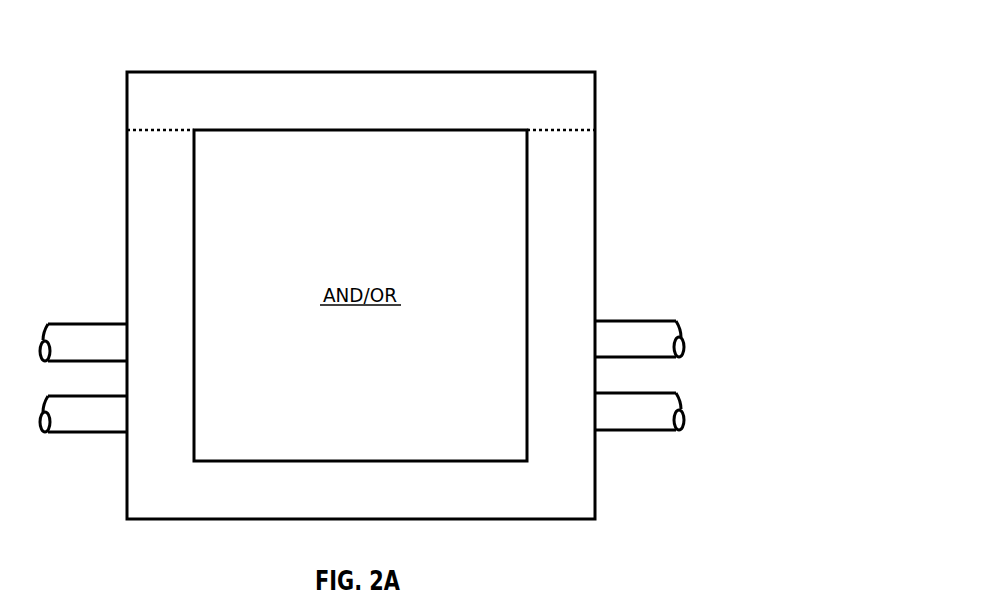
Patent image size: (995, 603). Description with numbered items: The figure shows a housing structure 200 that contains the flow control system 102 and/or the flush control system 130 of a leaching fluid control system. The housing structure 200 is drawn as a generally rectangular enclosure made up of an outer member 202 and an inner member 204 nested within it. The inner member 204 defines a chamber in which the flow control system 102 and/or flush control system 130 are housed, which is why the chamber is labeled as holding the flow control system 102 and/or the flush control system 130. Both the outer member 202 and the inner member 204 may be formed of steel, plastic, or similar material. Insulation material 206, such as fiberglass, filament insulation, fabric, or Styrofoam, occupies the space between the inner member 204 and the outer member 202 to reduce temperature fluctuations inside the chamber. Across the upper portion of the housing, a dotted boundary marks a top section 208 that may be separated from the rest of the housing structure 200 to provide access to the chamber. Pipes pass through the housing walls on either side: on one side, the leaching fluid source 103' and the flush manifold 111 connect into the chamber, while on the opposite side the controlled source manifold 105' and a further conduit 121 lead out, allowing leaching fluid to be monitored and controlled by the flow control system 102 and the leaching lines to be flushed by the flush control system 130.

The housing structure 200 is at (778, 42).
The outer member 202 is at (597, 277).
The inner member 204 is at (527, 424).
The insulation material 206 is at (567, 213).
The top section 208 is at (503, 71).
The flow control system 102 is at (320, 305).
The flush control system 130 is at (433, 305).
The leaching fluid source 103' is at (83, 342).
The flush manifold 111 is at (83, 414).
The controlled source manifold 105' is at (639, 339).
The outlet conduit 121 is at (639, 411).